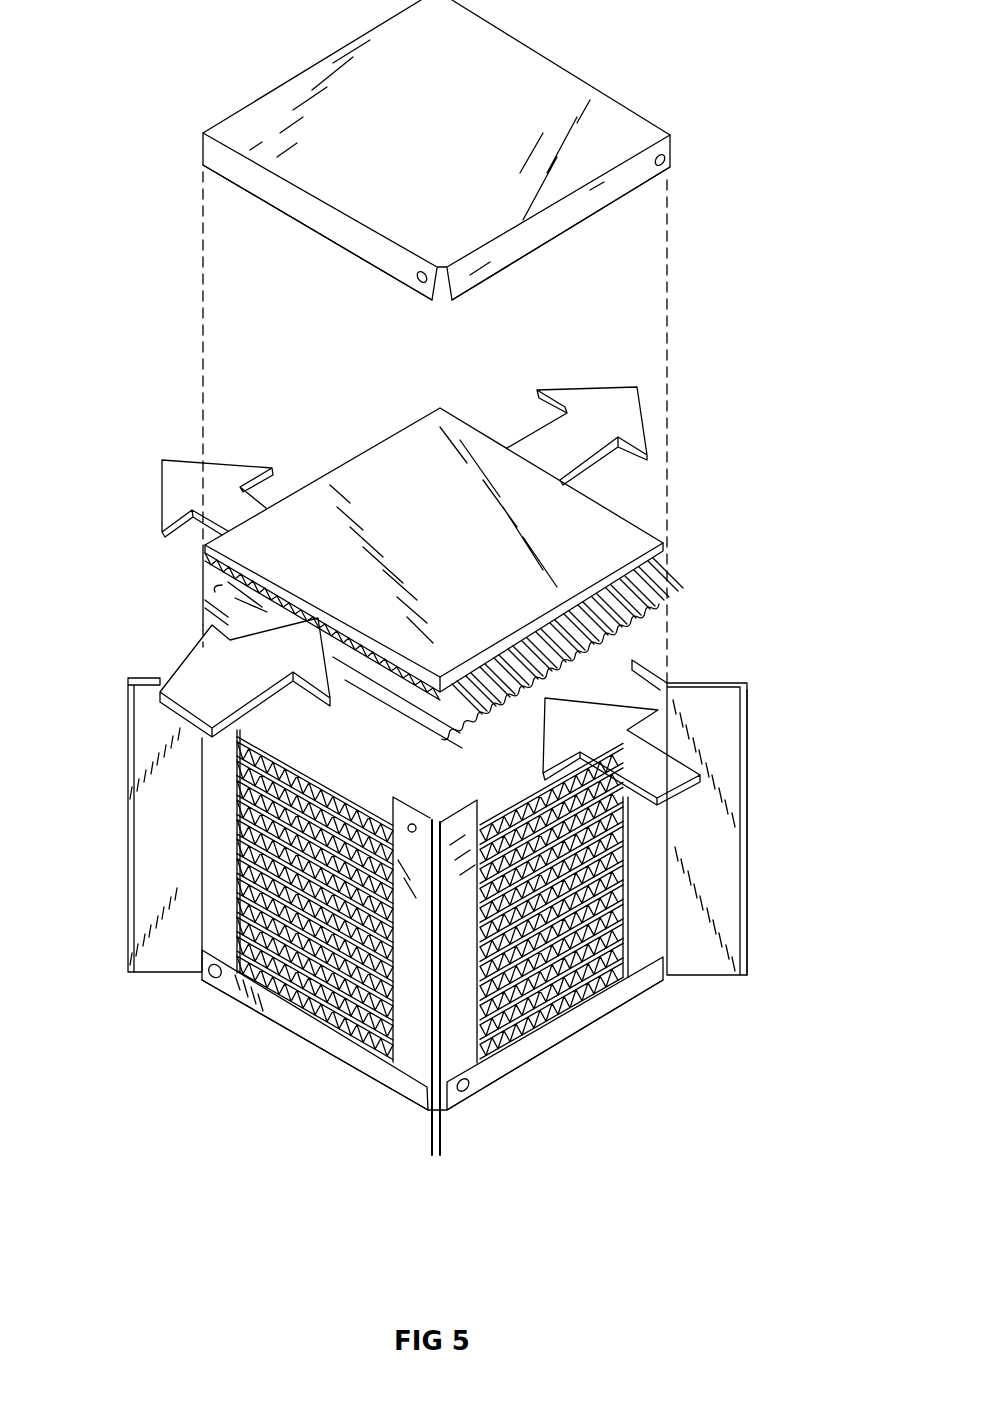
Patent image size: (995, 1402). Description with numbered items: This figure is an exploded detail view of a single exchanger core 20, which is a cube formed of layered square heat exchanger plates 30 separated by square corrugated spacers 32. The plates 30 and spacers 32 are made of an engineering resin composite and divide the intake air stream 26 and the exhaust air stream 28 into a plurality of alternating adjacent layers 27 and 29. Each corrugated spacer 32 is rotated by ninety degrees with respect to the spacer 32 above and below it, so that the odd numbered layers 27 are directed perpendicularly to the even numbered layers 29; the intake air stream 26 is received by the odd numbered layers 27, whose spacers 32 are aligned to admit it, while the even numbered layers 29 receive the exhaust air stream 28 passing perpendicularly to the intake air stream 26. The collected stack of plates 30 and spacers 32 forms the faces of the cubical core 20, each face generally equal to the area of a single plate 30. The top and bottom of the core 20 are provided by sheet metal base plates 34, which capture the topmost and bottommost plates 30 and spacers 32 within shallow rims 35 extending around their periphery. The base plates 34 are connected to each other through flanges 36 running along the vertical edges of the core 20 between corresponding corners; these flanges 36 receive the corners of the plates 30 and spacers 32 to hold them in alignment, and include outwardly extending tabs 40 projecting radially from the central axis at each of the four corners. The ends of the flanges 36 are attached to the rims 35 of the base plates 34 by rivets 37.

The exchanger core 20 is at (166, 247).
The intake air stream 26 is at (611, 425).
The odd numbered layers 27 is at (240, 880).
The exhaust air stream 28 is at (213, 497).
The even numbered layers 29 is at (632, 872).
The heat exchanger plate 30 is at (618, 536).
The corrugated spacer 32 is at (660, 600).
The base plate 34 is at (617, 110).
The rim 35 is at (582, 210).
The flange 36 is at (727, 932).
The rivet 37 is at (218, 976).
The tab 40 is at (747, 878).